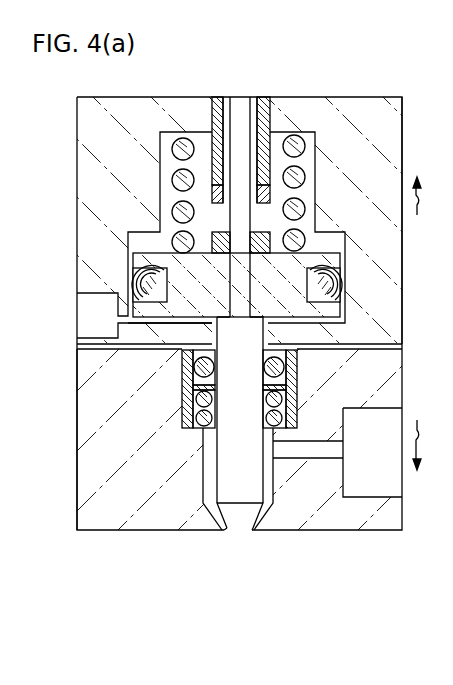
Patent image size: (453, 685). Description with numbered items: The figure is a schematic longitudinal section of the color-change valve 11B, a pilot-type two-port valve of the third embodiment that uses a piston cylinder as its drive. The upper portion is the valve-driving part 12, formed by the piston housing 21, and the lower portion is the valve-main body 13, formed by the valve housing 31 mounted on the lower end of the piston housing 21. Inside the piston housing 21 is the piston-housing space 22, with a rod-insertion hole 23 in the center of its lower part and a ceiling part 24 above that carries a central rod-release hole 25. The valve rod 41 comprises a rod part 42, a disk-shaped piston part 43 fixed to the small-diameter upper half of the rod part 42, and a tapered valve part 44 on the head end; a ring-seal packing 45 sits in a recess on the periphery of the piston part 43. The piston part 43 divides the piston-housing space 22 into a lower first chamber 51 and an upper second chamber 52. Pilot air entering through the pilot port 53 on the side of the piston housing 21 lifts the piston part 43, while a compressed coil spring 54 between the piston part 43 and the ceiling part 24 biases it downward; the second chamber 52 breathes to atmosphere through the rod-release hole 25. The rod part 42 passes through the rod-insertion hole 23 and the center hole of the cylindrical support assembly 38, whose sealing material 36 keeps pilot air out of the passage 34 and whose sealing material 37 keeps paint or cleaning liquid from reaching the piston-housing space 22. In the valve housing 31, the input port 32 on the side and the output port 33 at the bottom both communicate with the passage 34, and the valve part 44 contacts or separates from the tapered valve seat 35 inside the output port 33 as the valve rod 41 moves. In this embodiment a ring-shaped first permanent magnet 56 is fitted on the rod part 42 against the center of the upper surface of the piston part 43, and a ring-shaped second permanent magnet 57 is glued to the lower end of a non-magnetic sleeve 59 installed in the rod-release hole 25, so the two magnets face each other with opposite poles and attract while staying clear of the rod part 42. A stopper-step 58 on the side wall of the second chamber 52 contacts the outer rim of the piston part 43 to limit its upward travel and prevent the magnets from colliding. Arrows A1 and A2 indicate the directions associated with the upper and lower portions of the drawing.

The color-change valve 11B is at (392, 84).
The valve-driving part 12 is at (77, 143).
The valve-main body 13 is at (66, 508).
The piston housing 21 is at (388, 139).
The piston-housing space 22 is at (166, 158).
The rod-insertion hole 23 is at (245, 338).
The ceiling part 24 is at (183, 110).
The rod-release hole 25 is at (230, 110).
The valve housing 31 is at (98, 433).
The input port 32 is at (368, 497).
The output port 33 is at (246, 528).
The passage 34 is at (250, 472).
The valve seat 35 is at (218, 527).
The sealing material 36 is at (193, 375).
The sealing material 37 is at (193, 398).
The support assembly 38 is at (297, 372).
The valve rod 41 is at (240, 102).
The rod part 42 is at (252, 456).
The piston part 43 is at (216, 305).
The valve part 44 is at (238, 520).
The ring-seal packing 45 is at (330, 284).
The first chamber 51 is at (150, 323).
The second chamber 52 is at (163, 213).
The pilot port 53 is at (104, 297).
The coil spring 54 is at (300, 176).
The first permanent magnet 56 is at (224, 250).
The second permanent magnet 57 is at (213, 195).
The stopper-step 58 is at (148, 236).
The sleeve 59 is at (262, 122).
The flow direction A1 is at (424, 209).
The flow direction A2 is at (421, 434).